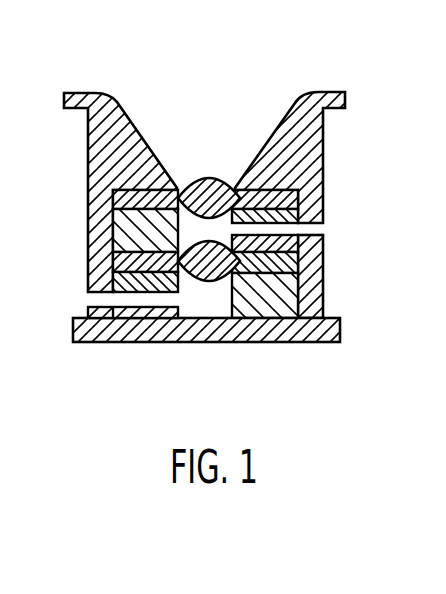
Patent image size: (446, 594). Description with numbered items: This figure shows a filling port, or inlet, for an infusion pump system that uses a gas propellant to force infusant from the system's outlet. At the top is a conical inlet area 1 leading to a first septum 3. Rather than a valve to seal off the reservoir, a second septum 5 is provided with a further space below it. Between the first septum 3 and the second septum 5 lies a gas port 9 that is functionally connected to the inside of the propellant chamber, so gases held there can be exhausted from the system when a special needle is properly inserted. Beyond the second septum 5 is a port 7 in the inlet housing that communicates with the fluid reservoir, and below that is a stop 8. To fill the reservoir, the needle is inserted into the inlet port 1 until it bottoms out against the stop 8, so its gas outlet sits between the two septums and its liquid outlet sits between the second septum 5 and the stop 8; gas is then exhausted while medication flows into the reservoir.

The conical inlet area 1 is at (248, 123).
The first septum 3 is at (200, 195).
The second septum 5 is at (300, 263).
The port 7 is at (80, 300).
The stop 8 is at (215, 343).
The gas port 9 is at (327, 230).